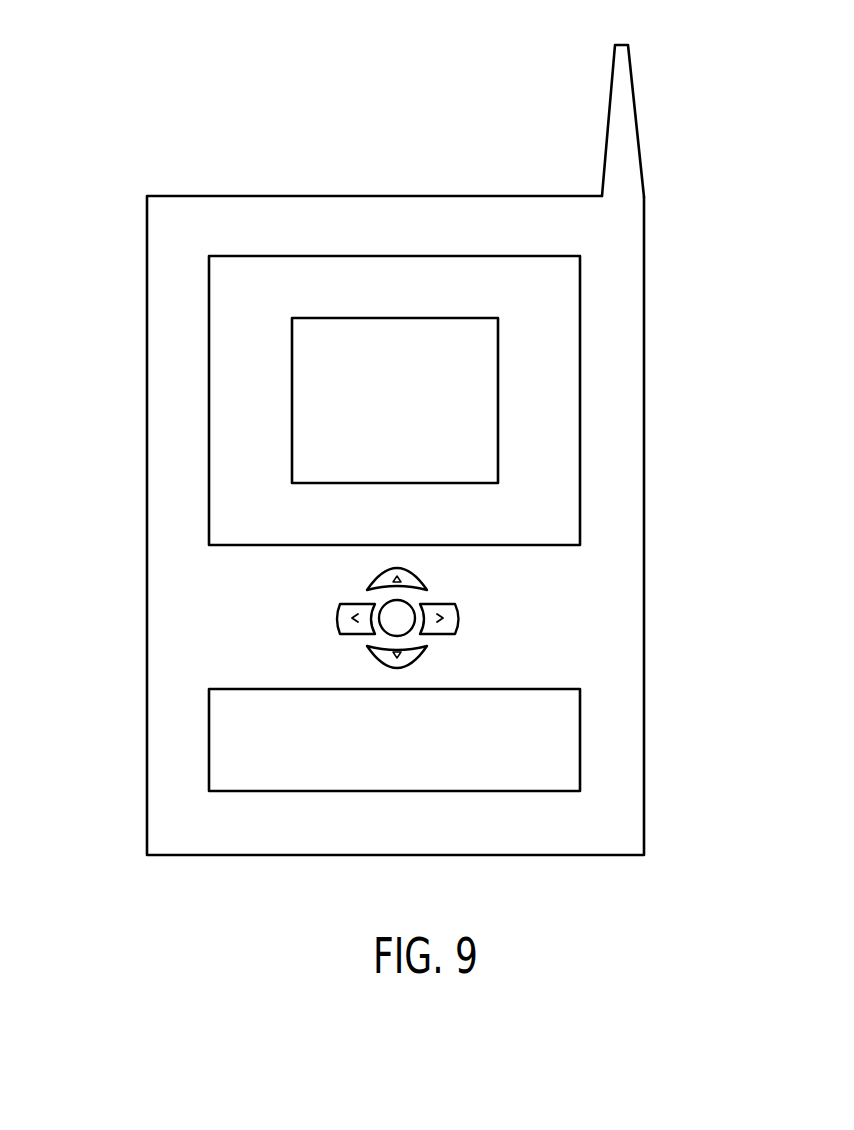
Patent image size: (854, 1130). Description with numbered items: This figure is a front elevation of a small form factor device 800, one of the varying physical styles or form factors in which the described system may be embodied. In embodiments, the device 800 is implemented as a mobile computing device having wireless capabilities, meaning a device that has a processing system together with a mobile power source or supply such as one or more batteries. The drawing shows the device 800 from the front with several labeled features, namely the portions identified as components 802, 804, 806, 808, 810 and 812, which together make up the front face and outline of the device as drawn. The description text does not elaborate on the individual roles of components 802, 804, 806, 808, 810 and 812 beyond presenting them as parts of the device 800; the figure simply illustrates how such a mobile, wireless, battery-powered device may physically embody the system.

The small form factor device 800 is at (148, 142).
The housing 802 is at (147, 608).
The display 804 is at (580, 308).
The keypad area 806 is at (580, 738).
The antenna 808 is at (607, 121).
The display window 810 is at (395, 318).
The navigation keys 812 is at (487, 620).